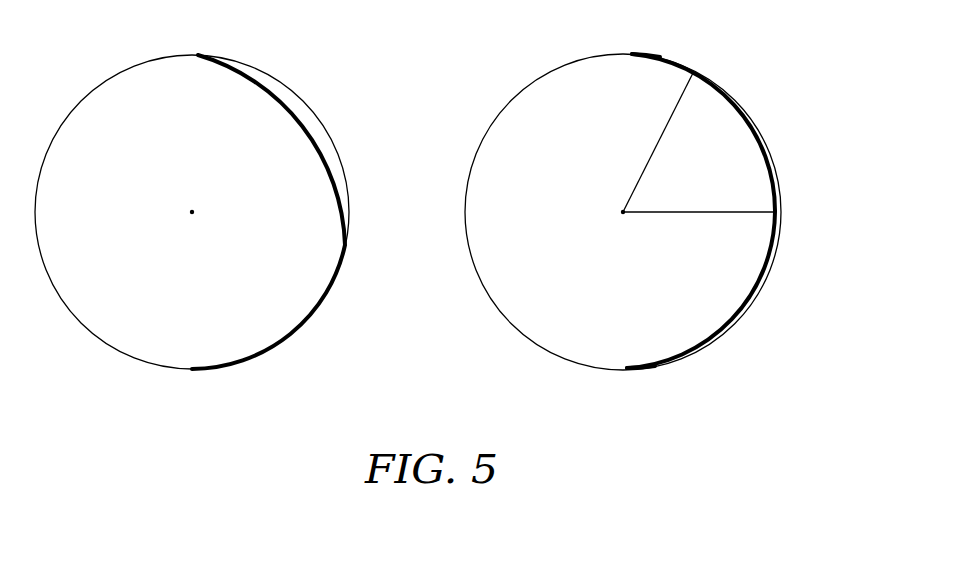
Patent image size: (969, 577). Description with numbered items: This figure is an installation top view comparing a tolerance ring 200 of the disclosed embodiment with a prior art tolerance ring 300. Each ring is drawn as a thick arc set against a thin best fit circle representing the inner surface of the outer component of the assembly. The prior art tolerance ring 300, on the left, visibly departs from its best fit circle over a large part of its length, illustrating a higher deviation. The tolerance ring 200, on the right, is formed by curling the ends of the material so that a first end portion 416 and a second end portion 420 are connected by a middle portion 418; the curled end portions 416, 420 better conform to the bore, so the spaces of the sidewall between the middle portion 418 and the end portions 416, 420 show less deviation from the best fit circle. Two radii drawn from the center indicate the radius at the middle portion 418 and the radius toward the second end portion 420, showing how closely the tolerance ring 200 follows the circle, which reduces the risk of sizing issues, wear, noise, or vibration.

The prior art tolerance ring 300 is at (296, 76).
The tolerance ring 200 is at (771, 111).
The middle portion 418 is at (781, 208).
The second end portion 420 is at (647, 53).
The first end portion 416 is at (635, 371).